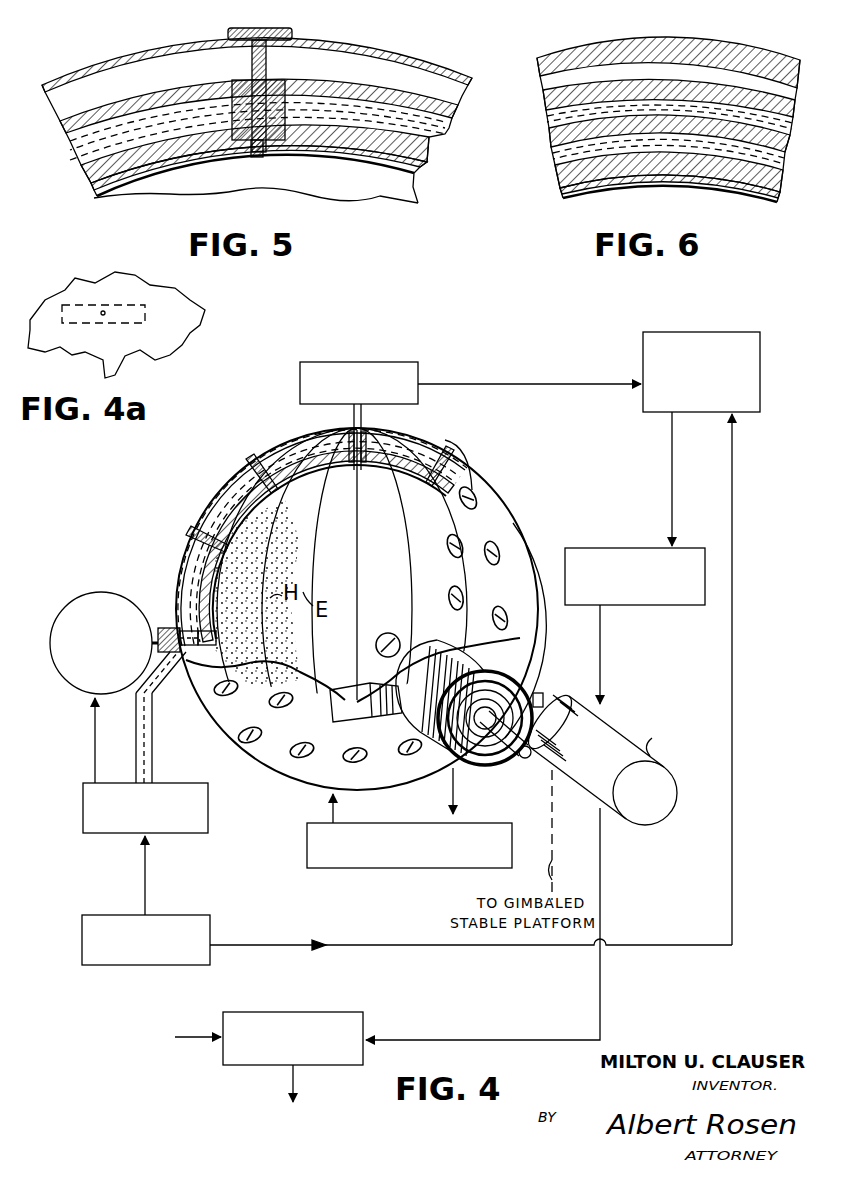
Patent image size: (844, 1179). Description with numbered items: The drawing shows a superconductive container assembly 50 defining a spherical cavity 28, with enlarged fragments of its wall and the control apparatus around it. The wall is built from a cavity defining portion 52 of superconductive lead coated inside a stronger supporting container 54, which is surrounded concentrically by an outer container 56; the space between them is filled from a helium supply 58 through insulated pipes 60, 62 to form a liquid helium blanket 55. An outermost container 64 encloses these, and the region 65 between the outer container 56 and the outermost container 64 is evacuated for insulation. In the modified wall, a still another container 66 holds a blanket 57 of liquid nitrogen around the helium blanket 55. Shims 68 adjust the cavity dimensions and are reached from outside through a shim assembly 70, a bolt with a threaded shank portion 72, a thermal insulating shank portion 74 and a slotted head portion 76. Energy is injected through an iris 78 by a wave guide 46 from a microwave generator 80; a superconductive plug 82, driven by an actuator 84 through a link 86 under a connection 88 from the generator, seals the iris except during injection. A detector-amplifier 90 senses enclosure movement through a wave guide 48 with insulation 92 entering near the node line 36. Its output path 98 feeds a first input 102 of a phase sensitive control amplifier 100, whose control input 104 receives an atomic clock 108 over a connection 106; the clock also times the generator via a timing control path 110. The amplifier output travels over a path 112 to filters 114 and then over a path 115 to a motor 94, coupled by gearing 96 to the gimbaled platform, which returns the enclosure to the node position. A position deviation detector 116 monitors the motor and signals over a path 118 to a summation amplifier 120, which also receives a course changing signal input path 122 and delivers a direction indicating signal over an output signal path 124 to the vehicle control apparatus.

In FIG. 5, the spherical cavity 28 is at (248, 189).
In FIG. 4, the spherical cavity 28 is at (329, 569).
In FIG. 4, the node line 36 is at (358, 524).
In FIG. 4A, the wave guide 46 is at (143, 323).
In FIG. 4, the wave guide 46 is at (152, 693).
In FIG. 4, the wave guide 48 is at (366, 425).
In FIG. 5, the container assembly 50 is at (96, 70).
In FIG. 4, the container assembly 50 is at (242, 481).
In FIG. 5, the cavity defining portion 52 is at (97, 197).
In FIG. 6, the cavity defining portion 52 is at (760, 203).
In FIG. 4A, the cavity defining portion 52 is at (185, 323).
In FIG. 4, the cavity defining portion 52 is at (322, 470).
In FIG. 5, the supporting container 54 is at (94, 184).
In FIG. 6, the supporting container 54 is at (563, 194).
In FIG. 4, the supporting container 54 is at (286, 486).
In FIG. 5, the blanket 55 is at (82, 162).
In FIG. 6, the blanket 55 is at (558, 176).
In FIG. 4, the blanket 55 is at (275, 460).
In FIG. 5, the outer container 56 is at (70, 130).
In FIG. 6, the outer container 56 is at (553, 156).
In FIG. 4, the outer container 56 is at (318, 448).
In FIG. 6, the blanket 57 is at (550, 134).
In FIG. 4, the helium supply 58 is at (394, 868).
In FIG. 4, the insulated pipe 60 is at (332, 809).
In FIG. 4, the insulated pipe 62 is at (449, 808).
In FIG. 5, the outermost container 64 is at (174, 40).
In FIG. 6, the outermost container 64 is at (775, 59).
In FIG. 4, the outermost container 64 is at (206, 520).
In FIG. 5, the region 65 is at (60, 106).
In FIG. 6, the region 65 is at (545, 92).
In FIG. 4, the region 65 is at (192, 557).
In FIG. 6, the still another container 66 is at (548, 114).
In FIG. 5, the shim 68 is at (264, 158).
In FIG. 4, the shim 68 is at (258, 500).
In FIG. 5, the shim assembly 70 is at (296, 33).
In FIG. 4, the shim assembly 70 is at (437, 452).
In FIG. 5, the threaded shank portion 72 is at (285, 88).
In FIG. 5, the thermal insulating shank portion 74 is at (251, 63).
In FIG. 5, the slotted head portion 76 is at (232, 29).
In FIG. 4A, the iris 78 is at (104, 311).
In FIG. 4, the iris 78 is at (216, 636).
In FIG. 4, the microwave generator 80 is at (208, 804).
In FIG. 4, the plug 82 is at (167, 628).
In FIG. 4, the actuator 84 is at (72, 602).
In FIG. 4, the link 86 is at (152, 612).
In FIG. 4, the connection 88 is at (93, 746).
In FIG. 4, the detector-amplifier 90 is at (400, 362).
In FIG. 4, the insulation 92 is at (352, 432).
In FIG. 4, the motor 94 is at (566, 704).
In FIG. 4, the gearing 96 is at (500, 676).
In FIG. 4, the output path 98 is at (512, 382).
In FIG. 4, the phase sensitive control amplifier 100 is at (751, 334).
In FIG. 4, the first input 102 is at (642, 378).
In FIG. 4, the control input 104 is at (734, 442).
In FIG. 4, the connection 106 is at (392, 944).
In FIG. 4, the atomic clock 108 is at (195, 915).
In FIG. 4, the timing control path 110 is at (148, 866).
In FIG. 4, the path 112 is at (670, 444).
In FIG. 4, the filters 114 is at (616, 548).
In FIG. 4, the path 115 is at (598, 633).
In FIG. 4, the position deviation detector 116 is at (664, 768).
In FIG. 4, the path 118 is at (603, 902).
In FIG. 4, the summation amplifier 120 is at (364, 1022).
In FIG. 4, the signal input path 122 is at (218, 1032).
In FIG. 4, the output signal path 124 is at (298, 1084).